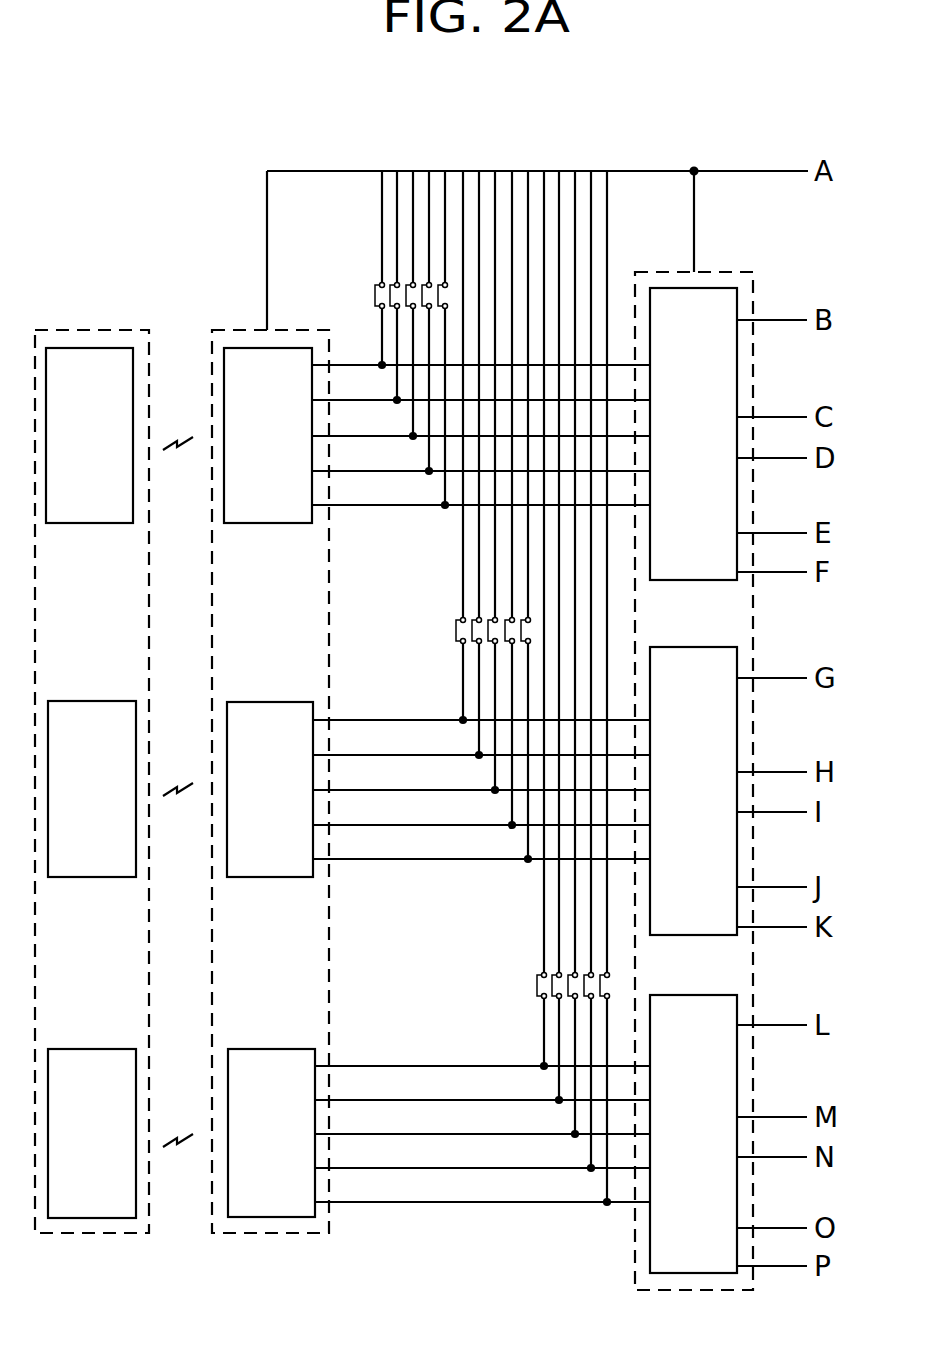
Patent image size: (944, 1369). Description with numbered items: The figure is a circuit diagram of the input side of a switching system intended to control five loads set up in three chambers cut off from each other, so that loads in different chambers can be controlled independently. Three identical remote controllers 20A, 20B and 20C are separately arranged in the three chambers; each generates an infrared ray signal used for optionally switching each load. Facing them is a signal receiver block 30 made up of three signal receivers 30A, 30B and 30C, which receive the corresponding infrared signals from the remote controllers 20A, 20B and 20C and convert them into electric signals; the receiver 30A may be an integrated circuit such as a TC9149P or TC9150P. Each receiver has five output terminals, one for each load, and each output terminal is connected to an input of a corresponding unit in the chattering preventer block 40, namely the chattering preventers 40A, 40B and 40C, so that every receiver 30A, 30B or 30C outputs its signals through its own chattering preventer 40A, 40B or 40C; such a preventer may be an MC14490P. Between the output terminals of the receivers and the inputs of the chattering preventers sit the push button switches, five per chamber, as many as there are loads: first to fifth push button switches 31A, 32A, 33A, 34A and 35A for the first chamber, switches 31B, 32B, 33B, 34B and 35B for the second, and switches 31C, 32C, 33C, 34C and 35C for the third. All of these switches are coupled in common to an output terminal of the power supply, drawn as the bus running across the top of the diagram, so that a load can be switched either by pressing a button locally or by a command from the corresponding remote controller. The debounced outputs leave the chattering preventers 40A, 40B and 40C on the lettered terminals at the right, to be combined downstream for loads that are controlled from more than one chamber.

The remote controller 20A is at (89, 435).
The remote controller 20B is at (92, 789).
The remote controller 20C is at (92, 1133).
The signal receiver block 30 is at (231, 329).
The signal receiver 30A is at (268, 435).
The signal receiver 30B is at (270, 789).
The signal receiver 30C is at (271, 1133).
The chattering preventer block 40 is at (715, 270).
The chattering preventer 40A is at (693, 434).
The chattering preventer 40B is at (693, 791).
The chattering preventer 40C is at (693, 1134).
The first push button switch 31A is at (380, 284).
The second push button switch 32A is at (395, 284).
The third push button switch 33A is at (411, 284).
The fourth push button switch 34A is at (427, 284).
The fifth push button switch 35A is at (443, 308).
The first push button switch 31B is at (460, 642).
The second push button switch 32B is at (477, 643).
The third push button switch 33B is at (493, 643).
The fourth push button switch 34B is at (526, 618).
The fifth push button switch 35B is at (510, 618).
The first push button switch 31C is at (541, 997).
The second push button switch 32C is at (557, 998).
The third push button switch 33C is at (573, 998).
The fourth push button switch 34C is at (589, 973).
The fifth push button switch 35C is at (605, 973).